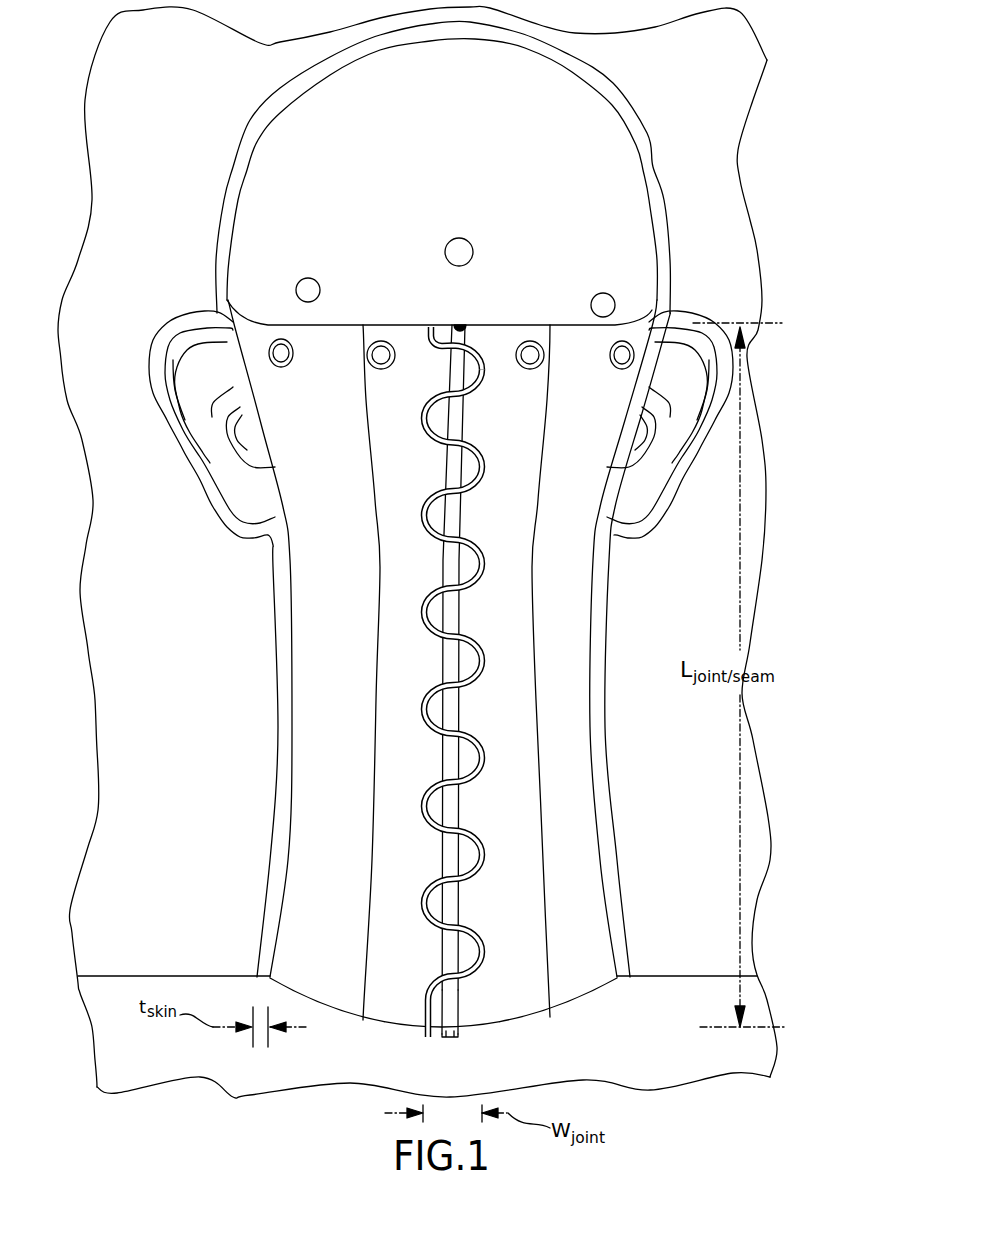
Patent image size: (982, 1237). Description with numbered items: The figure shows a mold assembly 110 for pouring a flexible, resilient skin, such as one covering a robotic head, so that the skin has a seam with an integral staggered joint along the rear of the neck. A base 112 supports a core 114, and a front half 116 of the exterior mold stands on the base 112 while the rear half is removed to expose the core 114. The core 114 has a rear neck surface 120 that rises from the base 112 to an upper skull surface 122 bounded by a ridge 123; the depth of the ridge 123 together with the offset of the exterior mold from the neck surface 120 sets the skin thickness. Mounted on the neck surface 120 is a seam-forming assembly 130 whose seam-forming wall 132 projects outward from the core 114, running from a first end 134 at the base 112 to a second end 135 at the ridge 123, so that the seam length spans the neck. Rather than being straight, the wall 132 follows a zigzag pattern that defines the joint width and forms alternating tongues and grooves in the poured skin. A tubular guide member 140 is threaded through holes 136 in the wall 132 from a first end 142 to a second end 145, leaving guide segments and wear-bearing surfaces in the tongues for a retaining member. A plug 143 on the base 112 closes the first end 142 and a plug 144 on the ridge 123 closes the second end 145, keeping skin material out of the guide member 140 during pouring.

The mold assembly 110 is at (217, 1088).
The base 112 is at (715, 1065).
The core 114 is at (543, 1043).
The front half of exterior mold assembly 116 is at (103, 732).
The rear neck surface 120 is at (507, 1027).
The upper skull surface 122 is at (258, 200).
The ridge 123 is at (265, 326).
The seam-forming assembly 130 is at (387, 1032).
The seam-forming wall 132 is at (423, 922).
The first end of wall 134 is at (417, 1023).
The second end of wall 135 is at (427, 337).
The holes 136 is at (440, 975).
The guide member 140 is at (463, 912).
The first end of guide member 142 is at (462, 1000).
The plug 143 is at (452, 1038).
The plug 144 is at (467, 325).
The second end of guide member 145 is at (450, 323).